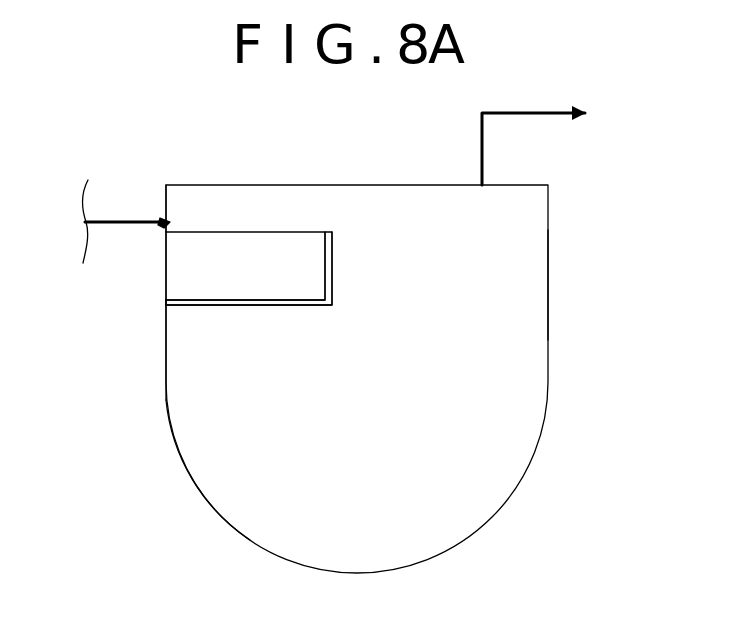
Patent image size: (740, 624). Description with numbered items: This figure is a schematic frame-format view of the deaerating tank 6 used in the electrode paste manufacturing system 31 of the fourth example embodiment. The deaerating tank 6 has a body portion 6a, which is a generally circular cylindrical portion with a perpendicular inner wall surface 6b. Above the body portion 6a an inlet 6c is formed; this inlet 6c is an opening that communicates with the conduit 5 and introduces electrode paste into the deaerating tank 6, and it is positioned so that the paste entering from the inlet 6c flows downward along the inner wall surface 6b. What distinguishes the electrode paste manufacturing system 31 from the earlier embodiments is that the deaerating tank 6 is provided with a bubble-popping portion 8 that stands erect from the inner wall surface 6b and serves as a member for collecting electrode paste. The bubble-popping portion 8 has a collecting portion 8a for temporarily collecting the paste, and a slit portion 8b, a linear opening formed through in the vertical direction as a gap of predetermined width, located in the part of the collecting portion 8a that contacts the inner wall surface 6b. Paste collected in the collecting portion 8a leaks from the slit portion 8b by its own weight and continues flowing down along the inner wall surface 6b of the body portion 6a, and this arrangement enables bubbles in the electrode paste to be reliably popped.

The deaerating tank 6 is at (569, 465).
The body portion 6a is at (559, 287).
The inner wall surface 6b is at (168, 352).
The inlet 6c is at (164, 221).
The conduit 5 is at (117, 240).
The bubble-popping portion 8 is at (355, 275).
The collecting portion 8a is at (262, 305).
The slit portion 8b is at (170, 312).
The electrode paste manufacturing system 31 is at (131, 473).